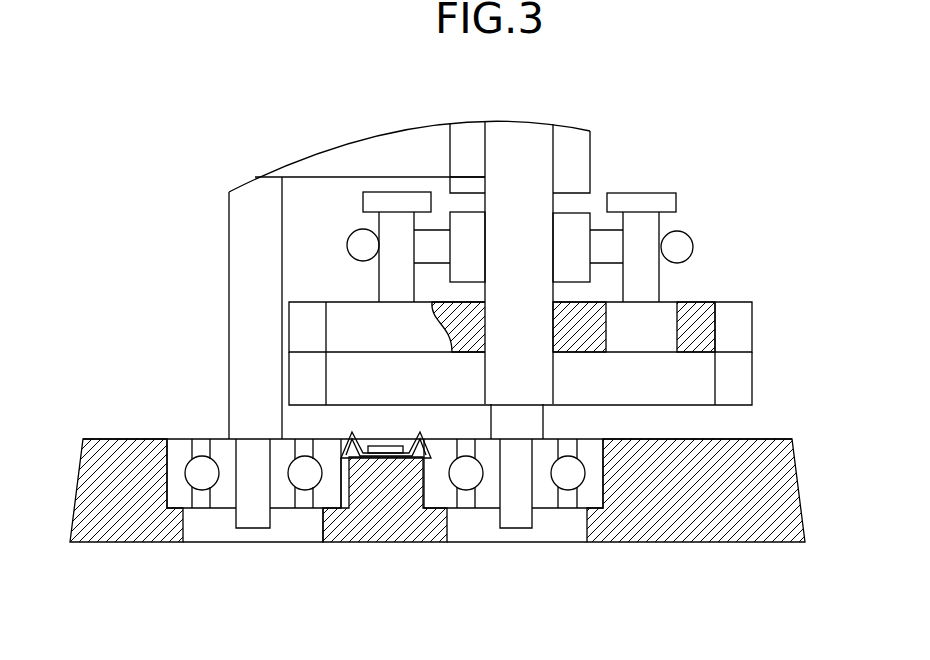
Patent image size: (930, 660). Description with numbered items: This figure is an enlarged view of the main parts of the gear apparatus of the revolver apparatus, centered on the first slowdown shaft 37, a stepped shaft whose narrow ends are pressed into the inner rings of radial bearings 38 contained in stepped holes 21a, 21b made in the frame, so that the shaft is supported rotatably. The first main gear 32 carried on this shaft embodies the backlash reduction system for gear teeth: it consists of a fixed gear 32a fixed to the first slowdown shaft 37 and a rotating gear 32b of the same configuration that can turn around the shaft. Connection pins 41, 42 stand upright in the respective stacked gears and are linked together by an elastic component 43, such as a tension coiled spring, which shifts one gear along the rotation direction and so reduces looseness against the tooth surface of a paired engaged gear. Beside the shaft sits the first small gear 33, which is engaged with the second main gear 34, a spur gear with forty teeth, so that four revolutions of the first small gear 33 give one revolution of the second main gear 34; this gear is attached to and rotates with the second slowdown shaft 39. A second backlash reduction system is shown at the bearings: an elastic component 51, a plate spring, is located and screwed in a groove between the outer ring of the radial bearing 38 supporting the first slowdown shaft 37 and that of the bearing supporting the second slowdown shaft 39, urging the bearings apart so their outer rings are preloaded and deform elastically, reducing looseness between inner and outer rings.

The stepped hole 21a is at (448, 527).
The stepped hole 21b is at (183, 527).
The first main gear 32 is at (582, 353).
The fixed gear 32a is at (742, 378).
The rotating gear 32b is at (742, 327).
The first small gear 33 is at (580, 150).
The second main gear 34 is at (409, 134).
The first slowdown shaft 37 is at (520, 134).
The radial bearing 38 is at (281, 500).
The second slowdown shaft 39 is at (240, 228).
The connection pin 41 is at (645, 223).
The connection pin 42 is at (392, 210).
The elastic component 43 is at (695, 247).
The elastic component 51 is at (378, 458).